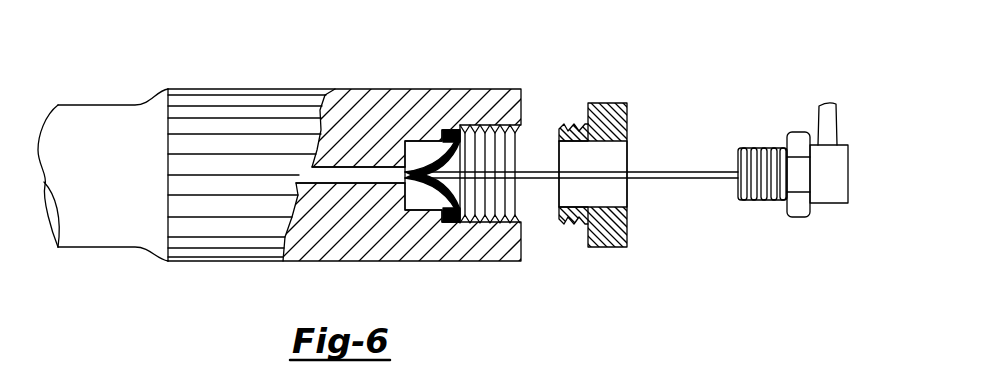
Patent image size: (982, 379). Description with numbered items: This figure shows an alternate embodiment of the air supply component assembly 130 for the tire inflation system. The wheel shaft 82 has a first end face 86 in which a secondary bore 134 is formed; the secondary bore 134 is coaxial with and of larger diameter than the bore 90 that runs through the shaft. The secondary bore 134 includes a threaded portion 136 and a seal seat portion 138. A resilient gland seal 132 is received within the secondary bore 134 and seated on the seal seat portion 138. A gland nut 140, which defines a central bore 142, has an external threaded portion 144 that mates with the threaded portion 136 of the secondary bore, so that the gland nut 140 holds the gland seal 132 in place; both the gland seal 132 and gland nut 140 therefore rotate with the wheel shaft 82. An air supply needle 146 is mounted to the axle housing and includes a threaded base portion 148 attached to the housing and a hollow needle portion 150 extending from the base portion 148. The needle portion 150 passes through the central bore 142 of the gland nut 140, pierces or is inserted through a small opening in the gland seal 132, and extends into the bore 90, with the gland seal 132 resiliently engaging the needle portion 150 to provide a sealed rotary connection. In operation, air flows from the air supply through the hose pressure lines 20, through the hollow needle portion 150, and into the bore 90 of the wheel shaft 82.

The hose pressure lines 20 is at (835, 120).
The wheel shaft 82 is at (119, 188).
The first end face 86 is at (522, 101).
The bore 90 is at (370, 176).
The air supply component assembly 130 is at (727, 228).
The gland seal 132 is at (444, 133).
The secondary bore 134 is at (415, 152).
The threaded portion 136 is at (507, 227).
The seal seat portion 138 is at (437, 213).
The gland nut 140 is at (625, 117).
The central bore 142 is at (617, 155).
The external threaded portion 144 is at (572, 125).
The air supply needle 146 is at (810, 212).
The threaded base portion 148 is at (757, 148).
The needle portion 150 is at (668, 182).